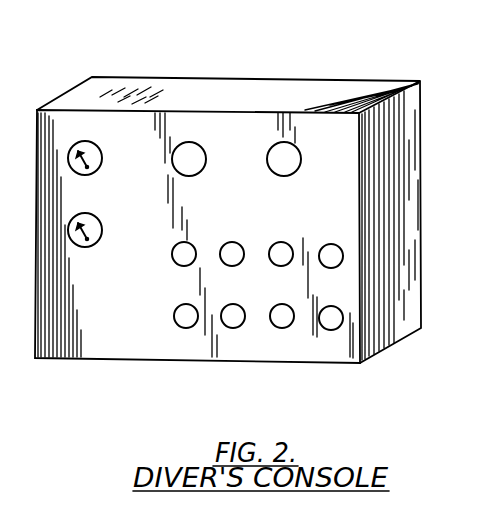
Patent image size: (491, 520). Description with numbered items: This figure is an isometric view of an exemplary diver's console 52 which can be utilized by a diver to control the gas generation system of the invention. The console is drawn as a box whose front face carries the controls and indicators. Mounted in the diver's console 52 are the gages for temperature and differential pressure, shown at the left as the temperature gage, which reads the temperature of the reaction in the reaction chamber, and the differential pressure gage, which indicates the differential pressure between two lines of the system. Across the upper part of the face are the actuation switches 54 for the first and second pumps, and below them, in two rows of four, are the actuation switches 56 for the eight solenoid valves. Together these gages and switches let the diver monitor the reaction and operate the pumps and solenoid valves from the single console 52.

The diver's console 52 is at (223, 112).
The actuation switches for the pumps 54 is at (198, 143).
The actuation switches for the solenoid valves 56 is at (287, 242).